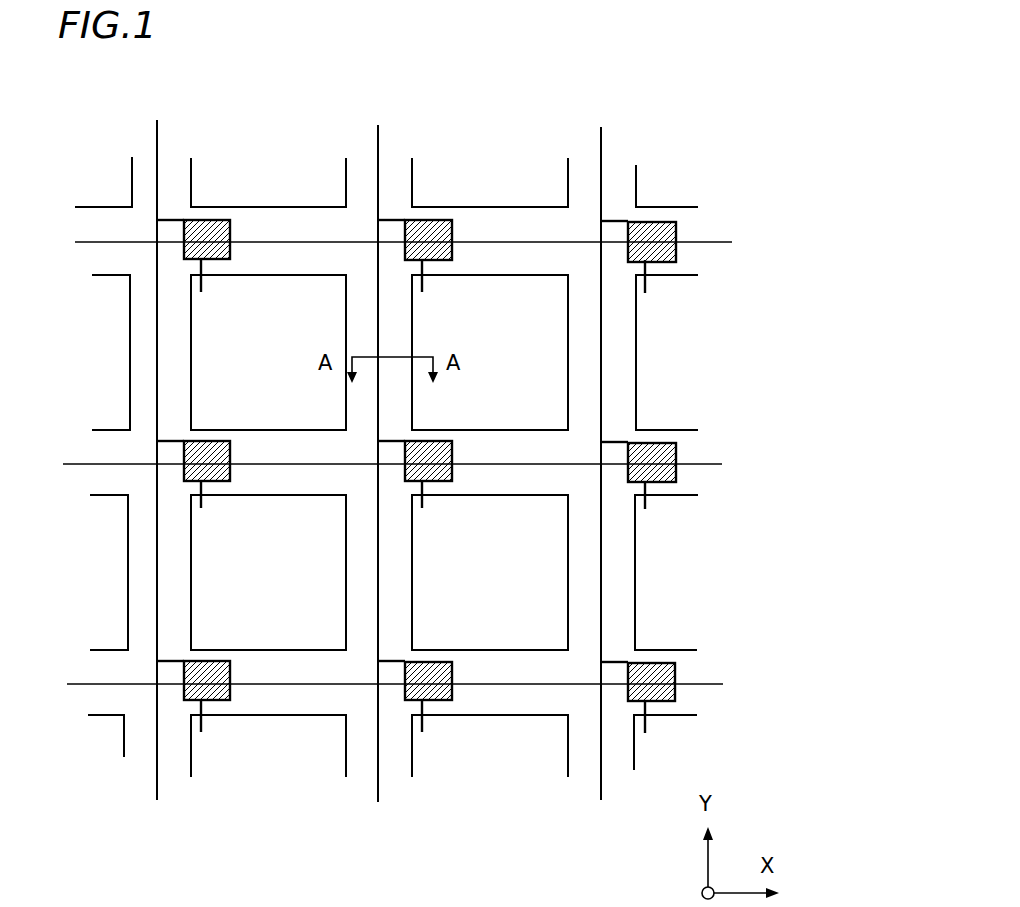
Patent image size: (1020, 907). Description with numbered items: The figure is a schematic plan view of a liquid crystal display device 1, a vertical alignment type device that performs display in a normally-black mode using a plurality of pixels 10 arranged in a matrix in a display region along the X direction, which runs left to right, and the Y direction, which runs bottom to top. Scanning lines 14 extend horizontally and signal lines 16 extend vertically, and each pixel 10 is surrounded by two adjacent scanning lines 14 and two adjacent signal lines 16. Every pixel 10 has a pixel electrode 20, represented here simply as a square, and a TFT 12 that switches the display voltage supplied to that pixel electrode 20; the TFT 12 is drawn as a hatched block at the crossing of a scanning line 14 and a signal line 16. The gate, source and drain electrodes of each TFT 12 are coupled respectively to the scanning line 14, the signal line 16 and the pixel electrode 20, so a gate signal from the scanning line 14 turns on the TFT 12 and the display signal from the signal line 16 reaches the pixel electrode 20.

The liquid crystal display device 1 is at (708, 122).
The pixel 10 is at (265, 265).
The TFT 12 is at (213, 220).
The scanning line 14 is at (732, 242).
The signal line 16 is at (158, 126).
The pixel electrode 20 is at (212, 353).